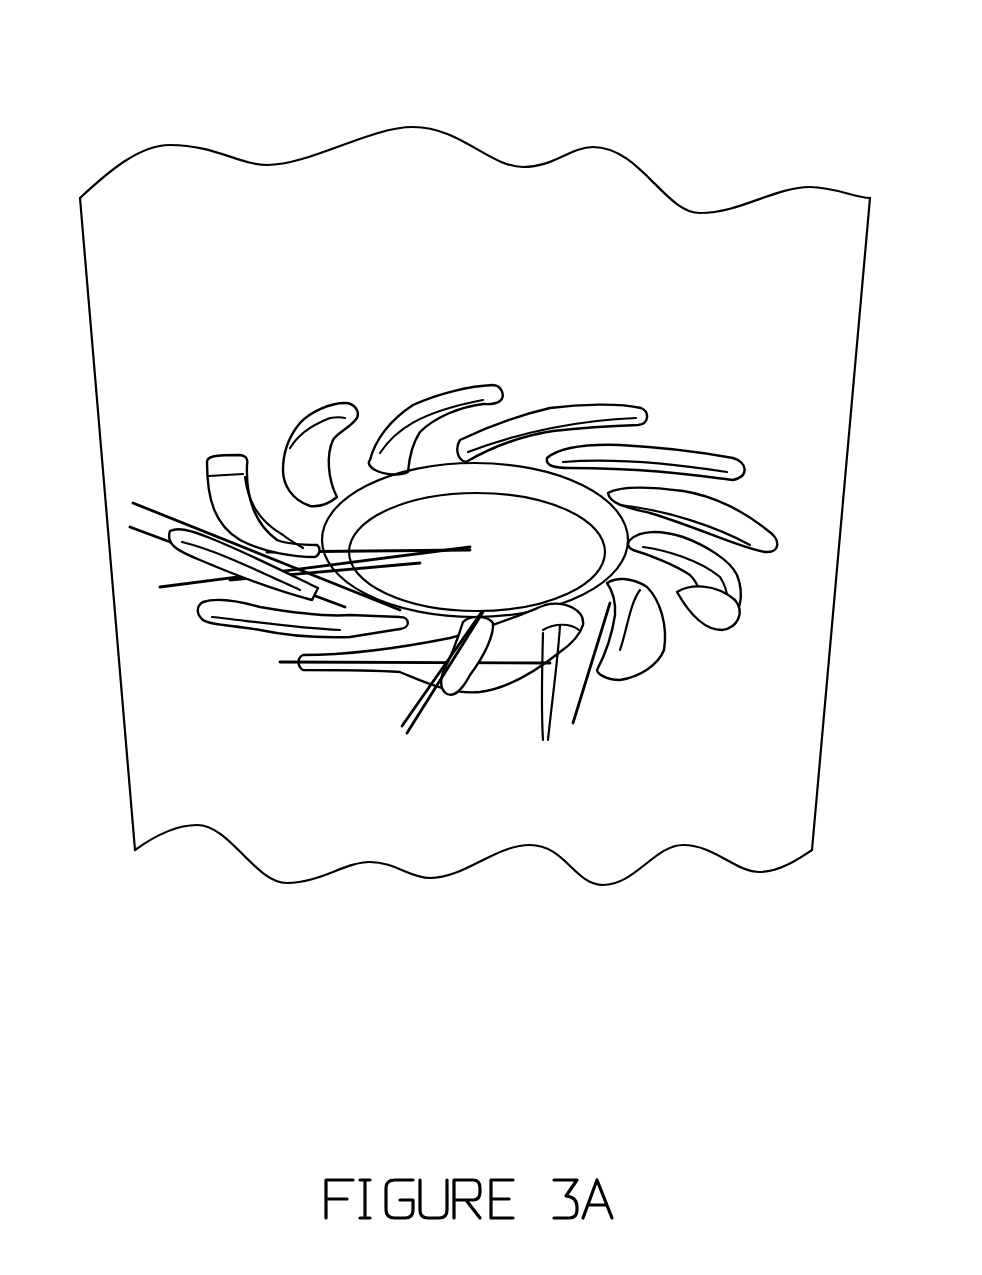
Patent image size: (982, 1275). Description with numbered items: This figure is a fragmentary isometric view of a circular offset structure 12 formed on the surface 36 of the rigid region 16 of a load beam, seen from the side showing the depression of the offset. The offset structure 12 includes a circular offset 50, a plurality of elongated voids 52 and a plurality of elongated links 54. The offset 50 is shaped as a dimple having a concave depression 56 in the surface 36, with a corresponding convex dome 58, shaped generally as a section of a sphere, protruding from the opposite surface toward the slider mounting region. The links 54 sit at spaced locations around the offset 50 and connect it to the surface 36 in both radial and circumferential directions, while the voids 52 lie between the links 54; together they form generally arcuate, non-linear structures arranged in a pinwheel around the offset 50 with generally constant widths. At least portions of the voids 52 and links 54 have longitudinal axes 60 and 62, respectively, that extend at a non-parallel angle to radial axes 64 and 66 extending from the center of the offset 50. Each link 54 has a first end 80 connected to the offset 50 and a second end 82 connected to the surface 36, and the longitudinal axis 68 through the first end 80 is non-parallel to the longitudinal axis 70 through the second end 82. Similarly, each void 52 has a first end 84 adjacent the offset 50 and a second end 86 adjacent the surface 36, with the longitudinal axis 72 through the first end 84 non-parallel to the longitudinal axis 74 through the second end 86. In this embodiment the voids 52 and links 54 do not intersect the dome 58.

The offset structure 12 is at (525, 330).
The rigid region 16 is at (267, 152).
The surface 36 is at (180, 240).
The circular offset 50 is at (535, 460).
The elongated voids 52 is at (766, 540).
The elongated links 54 is at (260, 478).
The concave depression 56 is at (491, 540).
The convex dome 58 is at (543, 742).
The longitudinal axis of void 60 is at (135, 562).
The longitudinal axis of link 62 is at (118, 583).
The radial axis 64 is at (180, 583).
The radial axis 66 is at (385, 478).
The longitudinal axis through first end of link 68 is at (430, 715).
The longitudinal axis through second end of link 70 is at (593, 680).
The longitudinal axis through first end of void 72 is at (410, 715).
The longitudinal axis through second end of void 74 is at (340, 697).
The first end of link 80 is at (643, 562).
The second end of link 82 is at (675, 641).
The first end of void 84 is at (645, 603).
The second end of void 86 is at (720, 630).